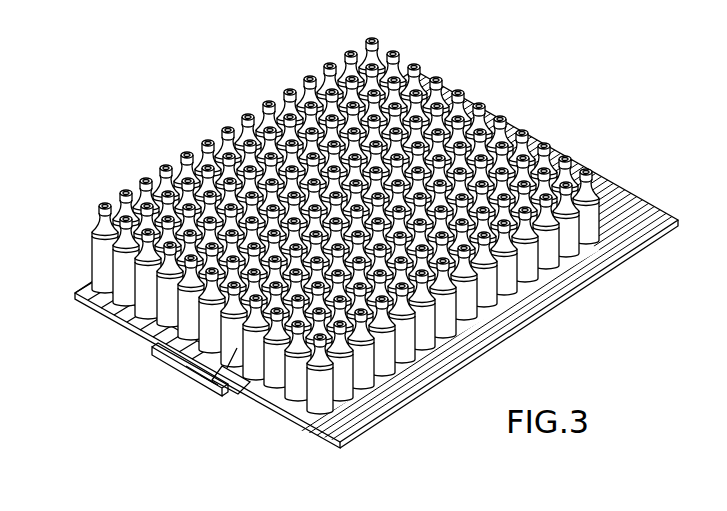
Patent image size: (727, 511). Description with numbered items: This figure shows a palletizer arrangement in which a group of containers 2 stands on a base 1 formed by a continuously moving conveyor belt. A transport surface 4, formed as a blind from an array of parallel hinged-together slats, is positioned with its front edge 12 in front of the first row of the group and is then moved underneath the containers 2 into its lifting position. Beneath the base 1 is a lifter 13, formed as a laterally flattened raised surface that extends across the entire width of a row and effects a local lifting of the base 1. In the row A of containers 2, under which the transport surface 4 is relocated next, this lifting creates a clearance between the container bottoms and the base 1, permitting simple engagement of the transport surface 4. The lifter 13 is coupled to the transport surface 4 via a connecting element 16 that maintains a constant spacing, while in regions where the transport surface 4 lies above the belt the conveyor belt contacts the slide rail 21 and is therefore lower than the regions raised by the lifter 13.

The base 1 is at (365, 410).
The containers 2 is at (468, 45).
The transport surface 4 is at (77, 297).
The front edge 12 is at (163, 352).
The lifter 13 is at (236, 398).
The connecting element 16 is at (193, 398).
The slide rail 21 is at (342, 445).
The row A is at (205, 403).